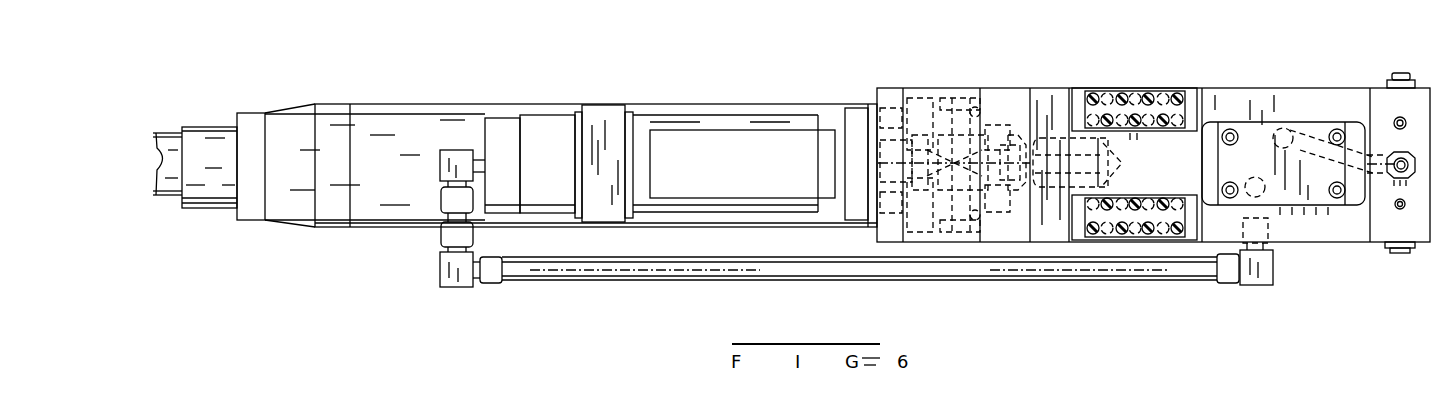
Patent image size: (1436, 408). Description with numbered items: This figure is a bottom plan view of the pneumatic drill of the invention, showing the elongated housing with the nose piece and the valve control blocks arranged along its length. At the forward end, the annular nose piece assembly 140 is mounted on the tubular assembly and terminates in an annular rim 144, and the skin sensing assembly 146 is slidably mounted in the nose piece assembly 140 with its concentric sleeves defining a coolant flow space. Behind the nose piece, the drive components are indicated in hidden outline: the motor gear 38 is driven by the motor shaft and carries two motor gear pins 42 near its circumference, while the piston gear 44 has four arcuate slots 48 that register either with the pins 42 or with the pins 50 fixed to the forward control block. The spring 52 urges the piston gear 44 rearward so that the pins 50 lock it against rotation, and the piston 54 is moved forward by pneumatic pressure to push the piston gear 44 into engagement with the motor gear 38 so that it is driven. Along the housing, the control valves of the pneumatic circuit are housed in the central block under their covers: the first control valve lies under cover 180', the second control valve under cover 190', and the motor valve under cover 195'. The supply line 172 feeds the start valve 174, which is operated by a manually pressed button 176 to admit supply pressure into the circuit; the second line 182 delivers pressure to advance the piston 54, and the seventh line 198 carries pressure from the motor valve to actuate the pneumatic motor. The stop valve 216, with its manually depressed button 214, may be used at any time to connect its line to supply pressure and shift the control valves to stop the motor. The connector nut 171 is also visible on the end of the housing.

The motor gear 38 is at (918, 232).
The motor gear pins 42 is at (938, 97).
The piston gear 44 is at (969, 233).
The arcuate slots 48 is at (960, 105).
The pins 50 is at (975, 115).
The spring 52 is at (987, 138).
The piston 54 is at (1046, 140).
The annular nose piece assembly 140 is at (285, 232).
The annular rim 144 is at (183, 131).
The skin sensing assembly 146 is at (210, 210).
The connector nut 171 is at (1412, 155).
The line 172 is at (1312, 135).
The start valve 174 is at (1428, 89).
The button 176 is at (1406, 74).
The cover 180' is at (1134, 97).
The second line 182 is at (1121, 163).
The cover 190' is at (1134, 252).
The cover 195' is at (1283, 135).
The seventh line 198 is at (805, 273).
The button 214 is at (1403, 253).
The stop valve 216 is at (1418, 252).